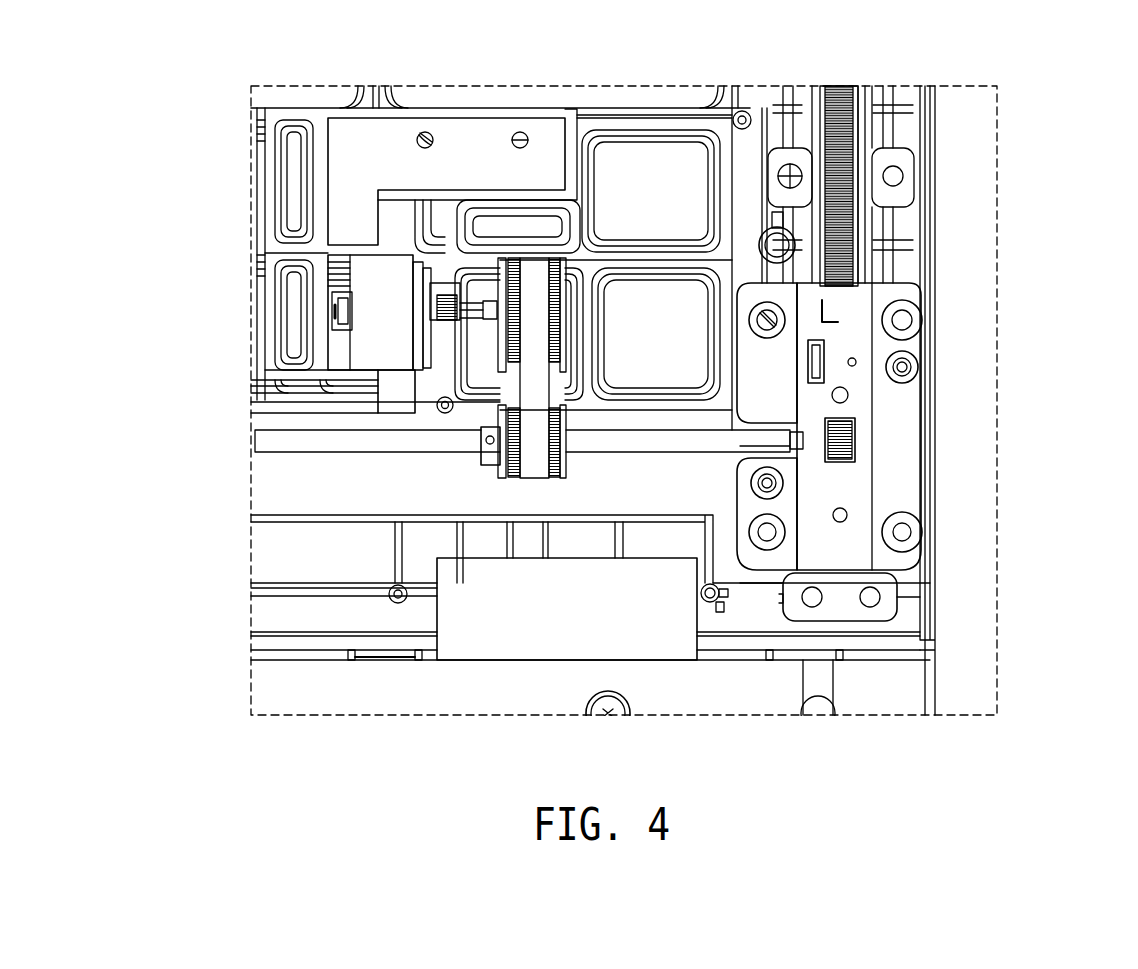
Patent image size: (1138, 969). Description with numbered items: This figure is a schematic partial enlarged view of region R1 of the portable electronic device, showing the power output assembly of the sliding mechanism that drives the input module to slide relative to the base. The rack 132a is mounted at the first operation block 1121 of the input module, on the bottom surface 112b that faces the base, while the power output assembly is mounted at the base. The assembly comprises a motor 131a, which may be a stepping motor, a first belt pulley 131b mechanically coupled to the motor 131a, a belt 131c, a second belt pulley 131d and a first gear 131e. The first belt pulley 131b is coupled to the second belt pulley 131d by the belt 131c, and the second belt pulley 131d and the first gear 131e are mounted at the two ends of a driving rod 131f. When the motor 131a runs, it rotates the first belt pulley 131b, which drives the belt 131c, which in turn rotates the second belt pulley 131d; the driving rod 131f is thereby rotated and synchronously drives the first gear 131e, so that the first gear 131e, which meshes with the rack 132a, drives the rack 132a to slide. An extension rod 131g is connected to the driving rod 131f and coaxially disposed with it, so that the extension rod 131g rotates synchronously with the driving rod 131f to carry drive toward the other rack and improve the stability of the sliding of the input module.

The region R1 is at (1000, 97).
The first operation block 1121 is at (958, 138).
The bottom surface 112b is at (881, 130).
The rack 132a is at (848, 232).
The motor 131a is at (382, 297).
The first belt pulley 131b is at (558, 307).
The belt 131c is at (537, 378).
The second belt pulley 131d is at (478, 455).
The first gear 131e is at (855, 443).
The driving rod 131f is at (662, 440).
The extension rod 131g is at (295, 442).